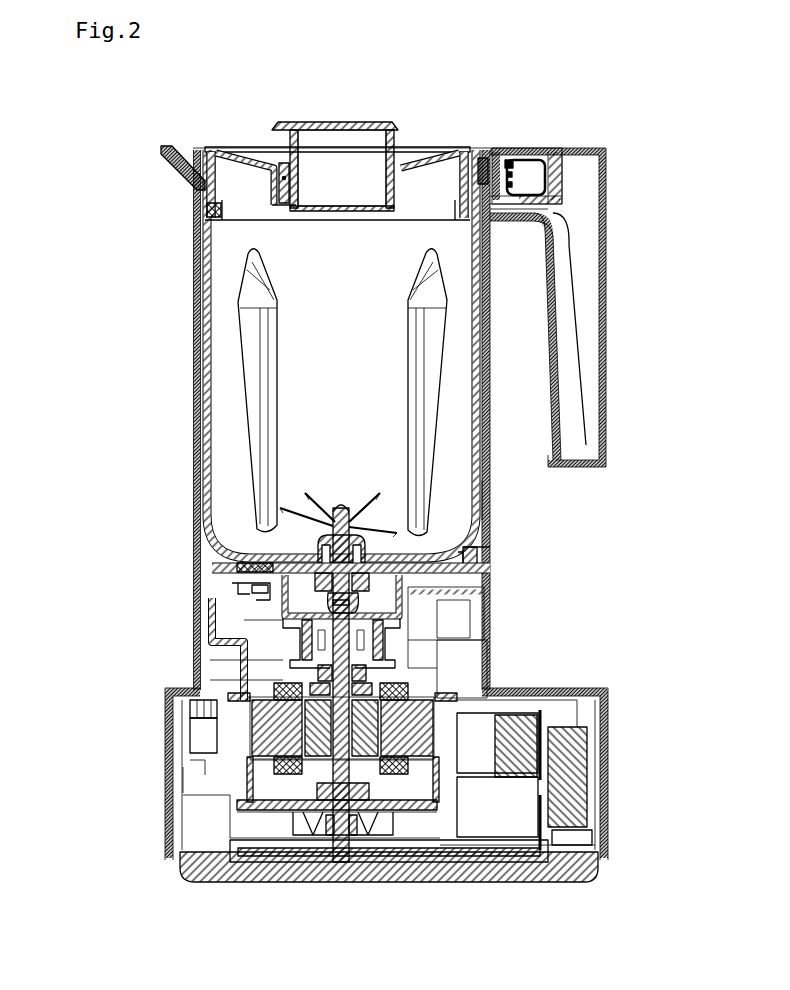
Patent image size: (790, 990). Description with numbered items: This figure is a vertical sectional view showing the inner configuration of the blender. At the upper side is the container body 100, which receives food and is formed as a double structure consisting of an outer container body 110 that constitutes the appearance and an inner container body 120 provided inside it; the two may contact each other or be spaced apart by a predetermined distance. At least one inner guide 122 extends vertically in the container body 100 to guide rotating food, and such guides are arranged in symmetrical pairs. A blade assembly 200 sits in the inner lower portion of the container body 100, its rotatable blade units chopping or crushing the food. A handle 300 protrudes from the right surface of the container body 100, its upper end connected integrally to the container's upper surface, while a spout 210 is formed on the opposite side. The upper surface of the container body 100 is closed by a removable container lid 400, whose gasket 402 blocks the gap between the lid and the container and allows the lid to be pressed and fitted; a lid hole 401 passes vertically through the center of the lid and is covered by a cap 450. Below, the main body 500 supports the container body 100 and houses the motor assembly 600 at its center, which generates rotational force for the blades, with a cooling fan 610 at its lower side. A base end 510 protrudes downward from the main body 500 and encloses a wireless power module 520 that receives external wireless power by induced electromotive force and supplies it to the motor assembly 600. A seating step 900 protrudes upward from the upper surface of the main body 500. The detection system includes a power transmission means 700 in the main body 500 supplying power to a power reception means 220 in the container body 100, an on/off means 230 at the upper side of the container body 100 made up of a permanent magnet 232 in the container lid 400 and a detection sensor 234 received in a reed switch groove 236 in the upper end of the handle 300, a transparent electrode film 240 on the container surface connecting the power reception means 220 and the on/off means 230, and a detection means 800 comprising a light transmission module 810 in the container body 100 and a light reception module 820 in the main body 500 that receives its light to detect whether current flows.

The container body 100 is at (163, 372).
The outer container body 110 is at (200, 258).
The inner container body 120 is at (207, 318).
The inner guide 122 is at (257, 412).
The blade assembly 200 is at (290, 543).
The spout 210 is at (170, 145).
The power reception means 220 is at (487, 558).
The on/off means 230 is at (540, 83).
The permanent magnet 232 is at (485, 165).
The detection sensor 234 is at (513, 170).
The reed switch groove 236 is at (548, 158).
The transparent electrode film 240 is at (492, 497).
The handle 300 is at (588, 337).
The container lid 400 is at (432, 134).
The lid hole 401 is at (279, 178).
The gasket 402 is at (205, 216).
The cap 450 is at (332, 122).
The main body 500 is at (600, 660).
The base end 510 is at (185, 866).
The wireless power module 520 is at (385, 858).
The motor assembly 600 is at (237, 732).
The cooling fan 610 is at (313, 836).
The power transmission means 700 is at (490, 582).
The detection means 800 is at (143, 557).
The light transmission module 810 is at (242, 566).
The light reception module 820 is at (250, 597).
The seating step 900 is at (492, 646).